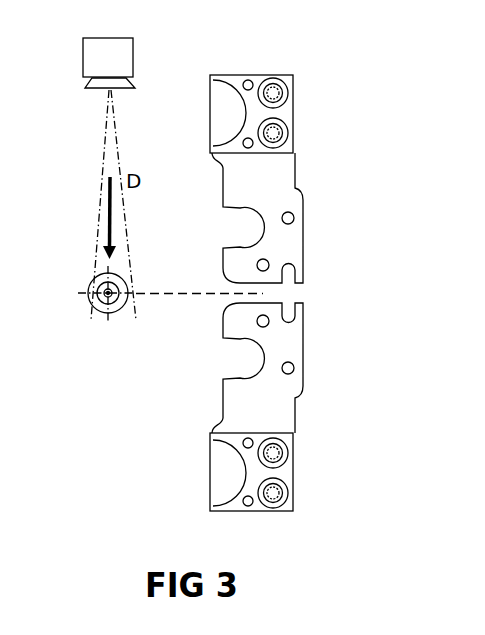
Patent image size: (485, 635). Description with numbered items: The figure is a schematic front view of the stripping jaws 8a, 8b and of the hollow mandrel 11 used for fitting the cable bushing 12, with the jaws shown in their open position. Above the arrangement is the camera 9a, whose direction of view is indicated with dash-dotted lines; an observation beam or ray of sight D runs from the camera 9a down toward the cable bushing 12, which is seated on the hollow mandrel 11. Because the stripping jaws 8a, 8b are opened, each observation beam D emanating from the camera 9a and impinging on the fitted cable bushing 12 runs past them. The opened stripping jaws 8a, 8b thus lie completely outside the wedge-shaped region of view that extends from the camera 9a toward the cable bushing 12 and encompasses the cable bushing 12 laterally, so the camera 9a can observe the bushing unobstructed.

The stripping jaw 8a is at (304, 136).
The stripping jaw 8b is at (301, 455).
The camera 9a is at (123, 53).
The hollow mandrel 11 is at (102, 297).
The cable bushing 12 is at (93, 282).